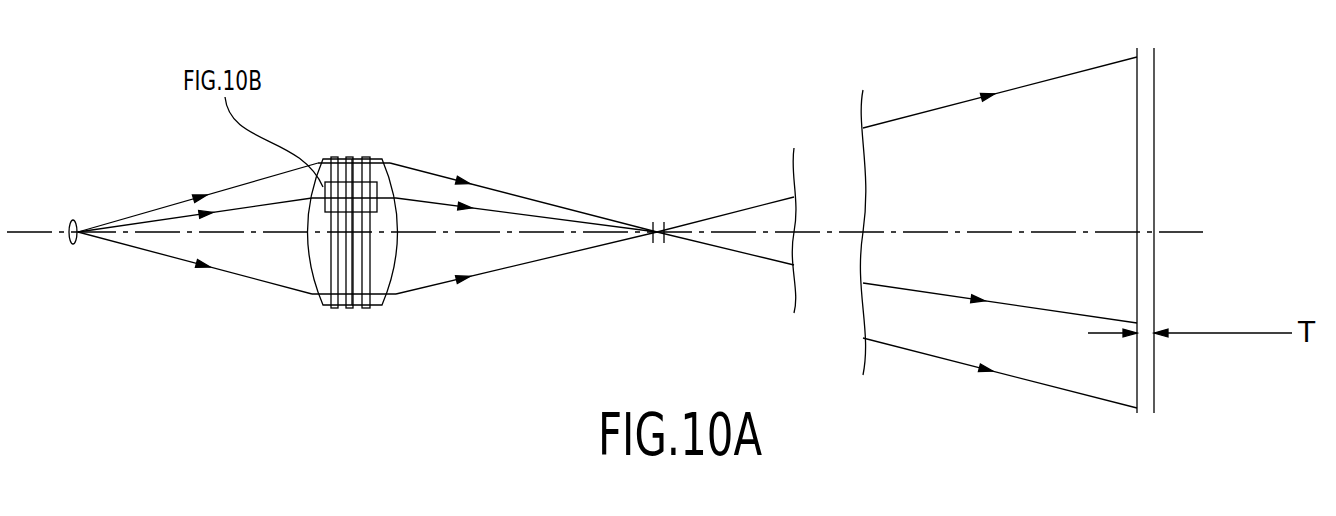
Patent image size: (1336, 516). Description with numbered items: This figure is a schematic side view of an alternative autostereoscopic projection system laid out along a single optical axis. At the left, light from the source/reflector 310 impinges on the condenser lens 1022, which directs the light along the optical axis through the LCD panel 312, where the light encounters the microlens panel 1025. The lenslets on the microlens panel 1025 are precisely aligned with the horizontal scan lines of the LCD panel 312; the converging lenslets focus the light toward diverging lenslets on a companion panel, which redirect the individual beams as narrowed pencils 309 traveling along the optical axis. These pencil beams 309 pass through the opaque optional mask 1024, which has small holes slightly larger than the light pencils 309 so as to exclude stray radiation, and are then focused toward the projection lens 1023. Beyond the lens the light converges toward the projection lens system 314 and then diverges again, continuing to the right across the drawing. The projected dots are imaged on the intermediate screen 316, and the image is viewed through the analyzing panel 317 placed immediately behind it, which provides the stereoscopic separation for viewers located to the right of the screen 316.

The light source and reflector 310 is at (78, 226).
The light pencils 309 is at (535, 215).
The LCD panel 312 is at (333, 160).
The condenser lens 1022 is at (318, 288).
The projection lens 1023 is at (392, 287).
The opaque optional mask 1024 is at (372, 177).
The microlens panel 1025 is at (350, 180).
The projection lens system 314 is at (657, 222).
The intermediate screen 316 is at (1137, 413).
The analyzing panel 317 is at (1154, 197).